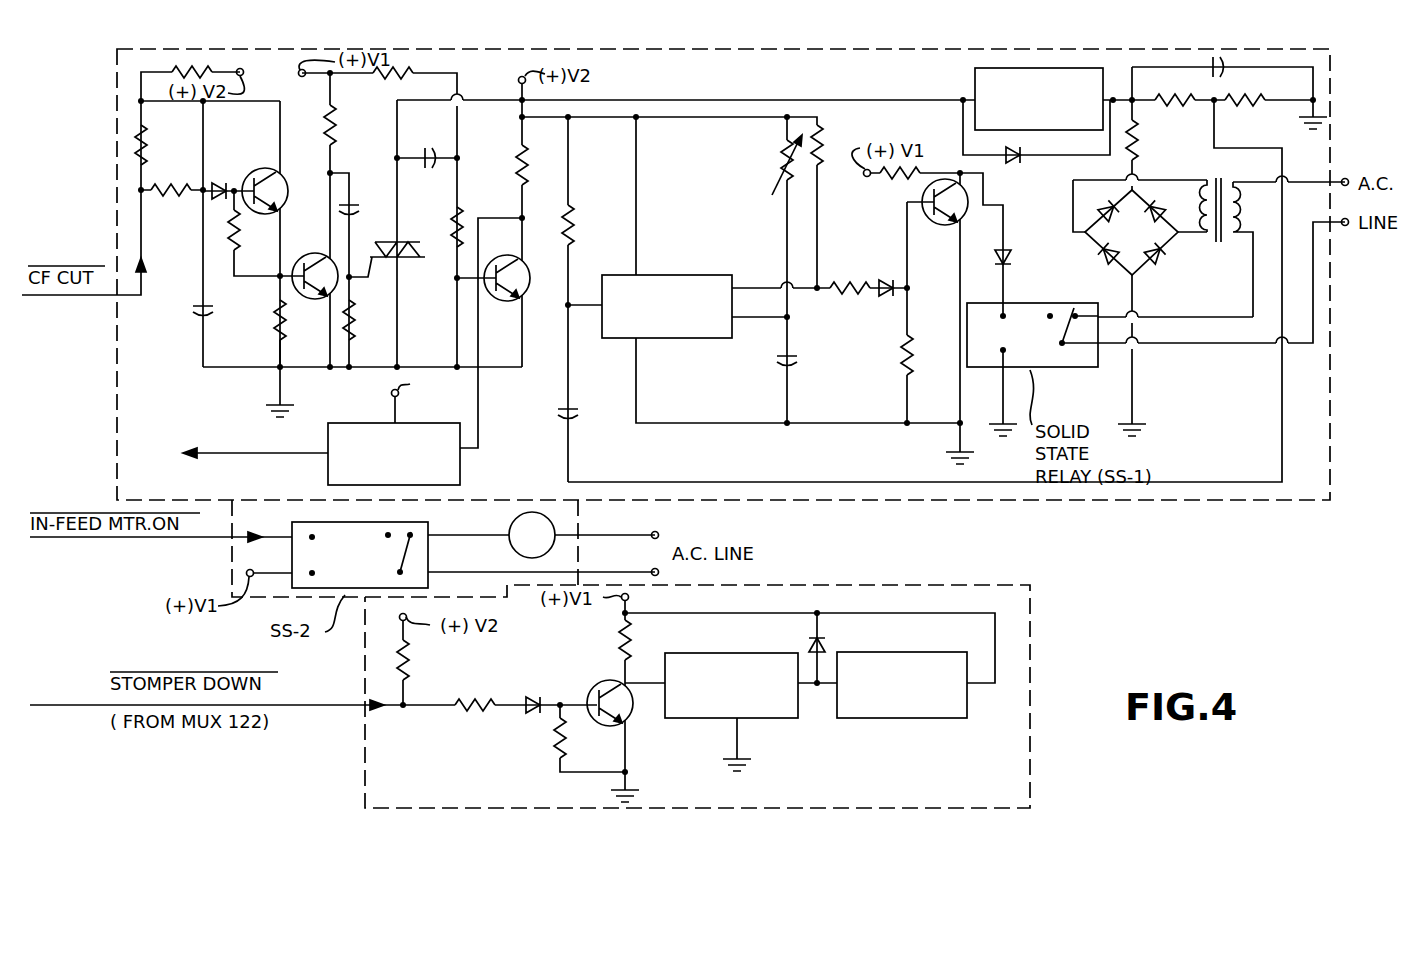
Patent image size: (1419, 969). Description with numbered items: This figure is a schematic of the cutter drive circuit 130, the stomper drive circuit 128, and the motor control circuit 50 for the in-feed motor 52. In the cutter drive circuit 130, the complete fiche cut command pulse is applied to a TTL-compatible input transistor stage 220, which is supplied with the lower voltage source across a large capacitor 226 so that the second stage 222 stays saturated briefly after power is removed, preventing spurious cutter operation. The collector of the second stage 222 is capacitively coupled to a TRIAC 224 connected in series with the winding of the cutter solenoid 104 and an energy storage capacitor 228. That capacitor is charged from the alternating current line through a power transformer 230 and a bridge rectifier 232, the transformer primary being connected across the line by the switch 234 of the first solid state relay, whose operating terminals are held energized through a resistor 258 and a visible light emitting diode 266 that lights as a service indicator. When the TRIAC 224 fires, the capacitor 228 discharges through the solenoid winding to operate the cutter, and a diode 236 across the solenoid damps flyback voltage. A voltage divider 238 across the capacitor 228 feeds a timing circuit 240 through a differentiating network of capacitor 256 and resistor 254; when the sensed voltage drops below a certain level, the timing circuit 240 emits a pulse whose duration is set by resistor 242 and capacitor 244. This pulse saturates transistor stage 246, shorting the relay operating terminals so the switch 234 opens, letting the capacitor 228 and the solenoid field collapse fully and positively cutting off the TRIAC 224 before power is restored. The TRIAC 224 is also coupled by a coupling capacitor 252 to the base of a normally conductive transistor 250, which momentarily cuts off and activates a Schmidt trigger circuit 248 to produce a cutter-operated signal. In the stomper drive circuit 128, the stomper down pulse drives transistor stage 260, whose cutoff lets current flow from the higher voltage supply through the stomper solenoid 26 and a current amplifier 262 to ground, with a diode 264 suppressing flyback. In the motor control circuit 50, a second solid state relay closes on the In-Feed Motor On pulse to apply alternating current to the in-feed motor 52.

The stomper solenoid 26 is at (907, 720).
The motor control circuit 50 is at (283, 597).
The in-feed motor 52 is at (508, 553).
The cutter solenoid 104 is at (974, 74).
The stomper drive circuit 128 is at (718, 810).
The cutter drive circuit 130 is at (1100, 505).
The input transistor stage 220 is at (260, 168).
The second stage 222 is at (296, 262).
The TRIAC 224 is at (404, 262).
The capacitor 226 is at (209, 316).
The energy storage capacitor 228 is at (1235, 74).
The power transformer 230 is at (1217, 248).
The bridge rectifier 232 is at (1140, 278).
The switch of solid state relay SS-1 234 is at (1055, 350).
The diode 236 is at (1014, 165).
The voltage divider 238 is at (1212, 103).
The timing circuit 240 is at (678, 340).
The resistor 242 is at (778, 165).
The capacitor 244 is at (800, 365).
The transistor stage 246 is at (920, 202).
The Schmidt trigger circuit 248 is at (462, 470).
The transistor 250 is at (530, 300).
The coupling capacitor 252 is at (433, 167).
The resistor 254 is at (578, 212).
The capacitor 256 is at (582, 420).
The resistor 258 is at (888, 182).
The transistor stage 260 is at (600, 682).
The current amplifier 262 is at (762, 720).
The diode 264 is at (805, 640).
The visible light emitting diode 266 is at (1012, 262).